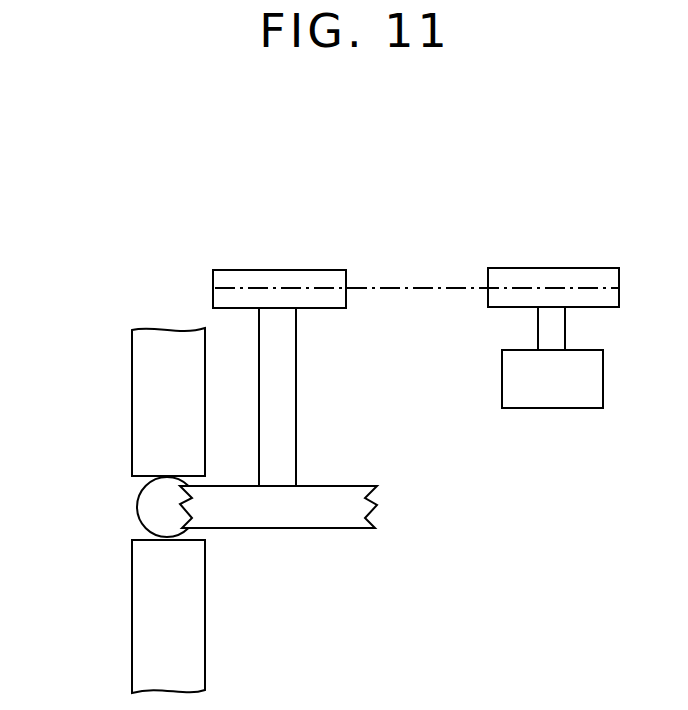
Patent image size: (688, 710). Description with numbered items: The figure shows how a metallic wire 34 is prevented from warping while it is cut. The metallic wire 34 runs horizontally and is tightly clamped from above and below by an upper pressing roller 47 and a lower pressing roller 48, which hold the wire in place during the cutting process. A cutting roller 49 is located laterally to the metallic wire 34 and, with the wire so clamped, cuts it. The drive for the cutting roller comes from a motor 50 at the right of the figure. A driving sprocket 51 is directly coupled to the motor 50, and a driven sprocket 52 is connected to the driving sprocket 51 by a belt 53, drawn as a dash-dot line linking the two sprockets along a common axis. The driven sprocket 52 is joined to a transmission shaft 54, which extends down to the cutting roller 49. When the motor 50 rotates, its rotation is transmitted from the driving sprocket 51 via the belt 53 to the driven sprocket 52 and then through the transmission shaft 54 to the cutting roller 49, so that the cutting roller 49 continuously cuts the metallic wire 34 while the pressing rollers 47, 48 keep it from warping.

The metallic wire 34 is at (138, 508).
The upper pressing roller 47 is at (132, 408).
The lower pressing roller 48 is at (132, 613).
The cutting roller 49 is at (315, 528).
The motor 50 is at (552, 408).
The driving sprocket 51 is at (553, 268).
The driven sprocket 52 is at (283, 270).
The belt 53 is at (425, 288).
The transmission shaft 54 is at (296, 403).